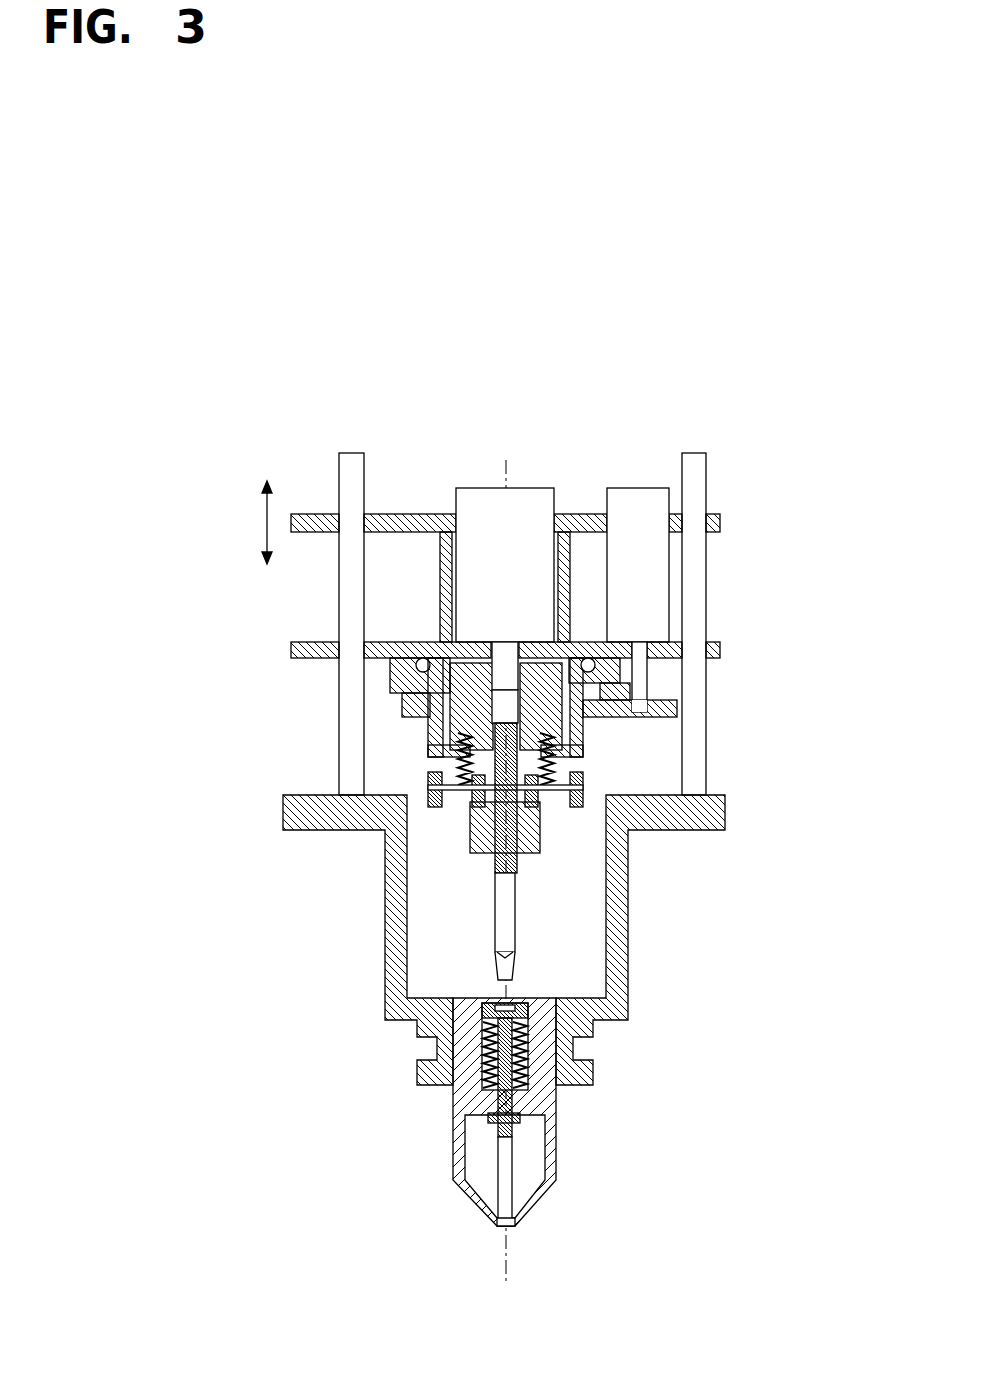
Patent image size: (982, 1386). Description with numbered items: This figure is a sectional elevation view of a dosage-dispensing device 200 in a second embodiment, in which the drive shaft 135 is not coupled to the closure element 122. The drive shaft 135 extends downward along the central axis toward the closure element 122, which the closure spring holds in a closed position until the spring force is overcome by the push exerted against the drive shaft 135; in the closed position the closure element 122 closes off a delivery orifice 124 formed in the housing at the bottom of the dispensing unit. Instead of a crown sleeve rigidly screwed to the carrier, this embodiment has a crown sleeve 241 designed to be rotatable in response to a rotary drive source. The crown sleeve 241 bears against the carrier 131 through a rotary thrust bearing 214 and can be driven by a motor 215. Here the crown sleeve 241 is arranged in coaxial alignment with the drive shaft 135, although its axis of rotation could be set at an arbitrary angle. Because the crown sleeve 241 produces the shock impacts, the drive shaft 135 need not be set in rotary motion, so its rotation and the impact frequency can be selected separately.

The dosage-dispensing device 200 is at (577, 832).
The carrier 131 is at (578, 523).
The motor 215 is at (637, 598).
The rotary thrust bearing 214 is at (592, 665).
The crown sleeve 241 is at (622, 717).
The drive shaft 135 is at (507, 924).
The closure element 122 is at (510, 1148).
The delivery orifice 124 is at (490, 1233).